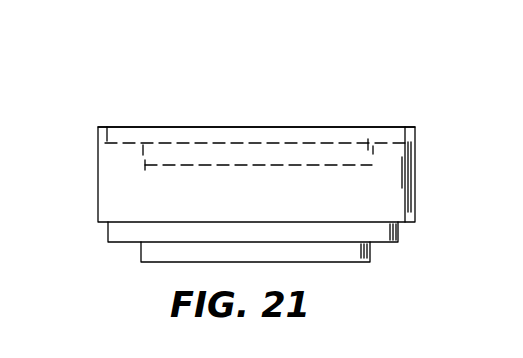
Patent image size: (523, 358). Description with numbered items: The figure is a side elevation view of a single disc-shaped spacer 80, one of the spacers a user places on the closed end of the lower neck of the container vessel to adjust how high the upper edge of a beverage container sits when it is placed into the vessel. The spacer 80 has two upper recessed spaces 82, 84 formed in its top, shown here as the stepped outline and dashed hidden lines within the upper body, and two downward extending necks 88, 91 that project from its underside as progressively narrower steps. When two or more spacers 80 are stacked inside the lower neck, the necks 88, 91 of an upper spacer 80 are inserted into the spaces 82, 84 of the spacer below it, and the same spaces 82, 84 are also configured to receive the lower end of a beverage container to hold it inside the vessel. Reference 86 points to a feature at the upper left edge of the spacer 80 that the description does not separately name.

The spacer 80 is at (128, 65).
The upper recessed space 82 is at (338, 124).
The upper recessed space 84 is at (197, 163).
The end cap 86 is at (117, 142).
The downward extending neck 91 is at (388, 240).
The downward extending neck 88 is at (362, 262).